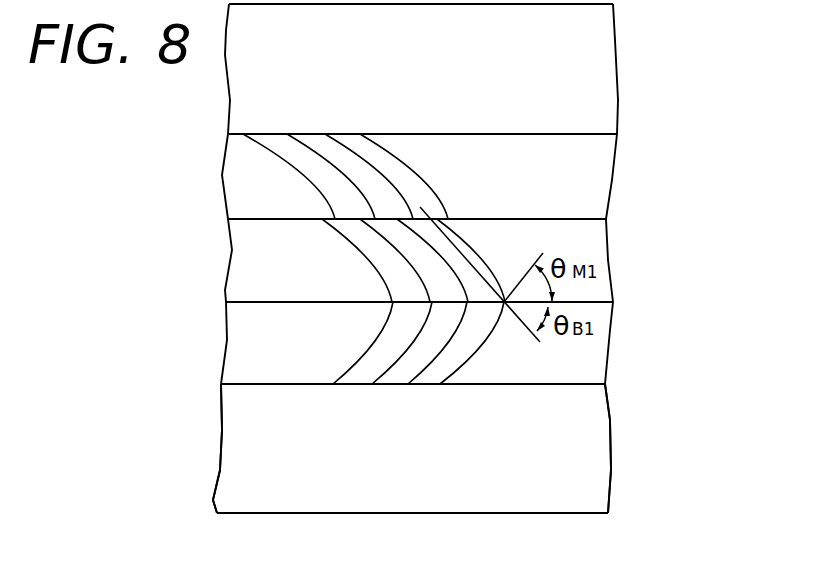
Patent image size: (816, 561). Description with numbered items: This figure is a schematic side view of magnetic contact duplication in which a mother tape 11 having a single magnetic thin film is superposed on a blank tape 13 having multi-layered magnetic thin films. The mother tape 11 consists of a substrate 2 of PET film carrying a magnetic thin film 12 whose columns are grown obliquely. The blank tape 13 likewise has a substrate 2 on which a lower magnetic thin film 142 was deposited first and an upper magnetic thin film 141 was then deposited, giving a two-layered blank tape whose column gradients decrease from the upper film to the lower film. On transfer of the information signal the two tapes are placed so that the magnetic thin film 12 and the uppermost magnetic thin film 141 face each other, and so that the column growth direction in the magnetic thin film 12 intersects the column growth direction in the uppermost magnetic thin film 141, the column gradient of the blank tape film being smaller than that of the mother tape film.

The substrate 2 is at (597, 92).
The mother tape 11 is at (486, 407).
The magnetic thin film 12 is at (466, 343).
The blank tape 13 is at (496, 207).
The upper magnetic thin film 141 is at (598, 243).
The lower magnetic thin film 142 is at (598, 167).